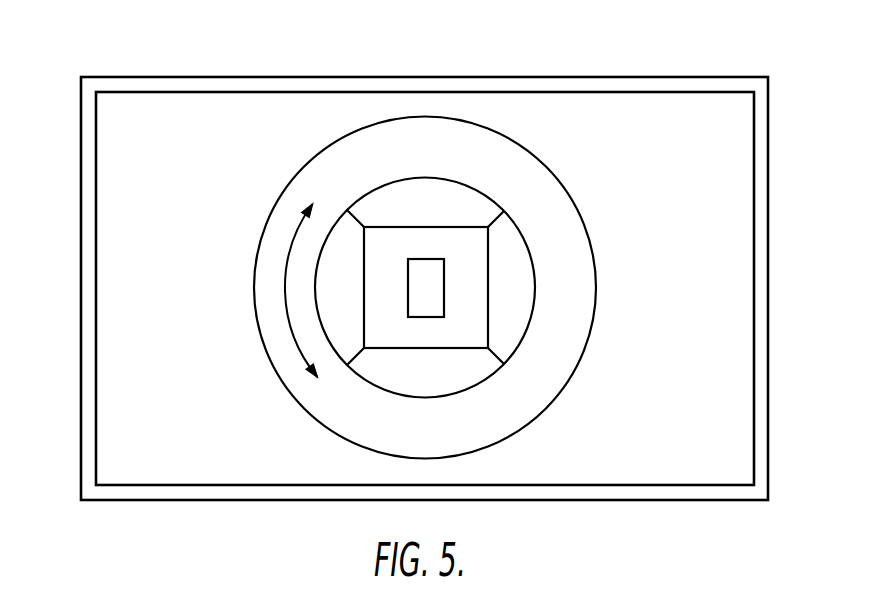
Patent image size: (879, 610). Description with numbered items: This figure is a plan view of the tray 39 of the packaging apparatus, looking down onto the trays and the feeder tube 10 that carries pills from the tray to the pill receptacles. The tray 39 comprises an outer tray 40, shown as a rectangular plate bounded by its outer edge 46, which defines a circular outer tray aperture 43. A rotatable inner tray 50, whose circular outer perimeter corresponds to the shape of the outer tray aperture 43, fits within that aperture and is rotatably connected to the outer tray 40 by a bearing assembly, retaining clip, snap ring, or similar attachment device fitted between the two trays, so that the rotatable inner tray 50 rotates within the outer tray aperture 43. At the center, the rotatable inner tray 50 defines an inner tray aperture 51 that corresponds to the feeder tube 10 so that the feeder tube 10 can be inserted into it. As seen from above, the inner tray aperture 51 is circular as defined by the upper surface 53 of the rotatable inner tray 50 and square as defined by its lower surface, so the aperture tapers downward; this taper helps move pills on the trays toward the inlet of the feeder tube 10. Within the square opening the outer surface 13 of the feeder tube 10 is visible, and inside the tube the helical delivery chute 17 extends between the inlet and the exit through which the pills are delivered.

The feeder tube 10 is at (453, 328).
The outer surface 13 is at (608, 287).
The helical delivery chute 17 is at (424, 290).
The tray 39 is at (58, 385).
The outer tray 40 is at (117, 243).
The outer tray aperture 43 is at (277, 201).
The frame 46 is at (770, 128).
The rotatable inner tray 50 is at (543, 220).
The inner tray aperture 51 is at (493, 263).
The upper surface 53 is at (152, 396).